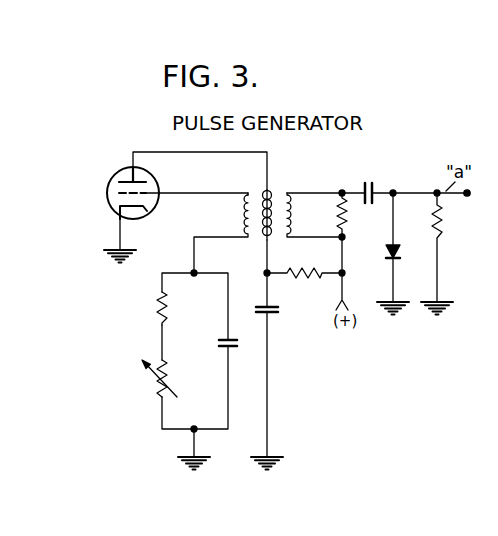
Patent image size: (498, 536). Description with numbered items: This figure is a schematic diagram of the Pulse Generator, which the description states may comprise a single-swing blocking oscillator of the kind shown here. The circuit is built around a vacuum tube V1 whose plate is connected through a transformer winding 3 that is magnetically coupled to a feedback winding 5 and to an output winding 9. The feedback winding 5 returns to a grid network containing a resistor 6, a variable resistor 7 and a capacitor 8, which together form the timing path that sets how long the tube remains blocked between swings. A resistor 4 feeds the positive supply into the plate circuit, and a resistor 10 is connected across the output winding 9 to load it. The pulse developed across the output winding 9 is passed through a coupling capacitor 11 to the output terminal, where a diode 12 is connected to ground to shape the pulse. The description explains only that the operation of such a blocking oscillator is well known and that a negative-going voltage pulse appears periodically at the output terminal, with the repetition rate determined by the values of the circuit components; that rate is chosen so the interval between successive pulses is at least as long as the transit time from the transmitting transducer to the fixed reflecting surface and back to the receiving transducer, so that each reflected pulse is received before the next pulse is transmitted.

The vacuum tube V1 is at (113, 175).
The transformer primary winding 3 is at (269, 194).
The feedback winding 5 is at (242, 215).
The output winding 9 is at (294, 215).
The resistor 10 is at (345, 230).
The coupling capacitor 11 is at (373, 188).
The diode 12 is at (390, 250).
The resistor 4 is at (308, 274).
The resistor 6 is at (167, 319).
The variable resistor 7 is at (166, 374).
The capacitor 8 is at (219, 344).